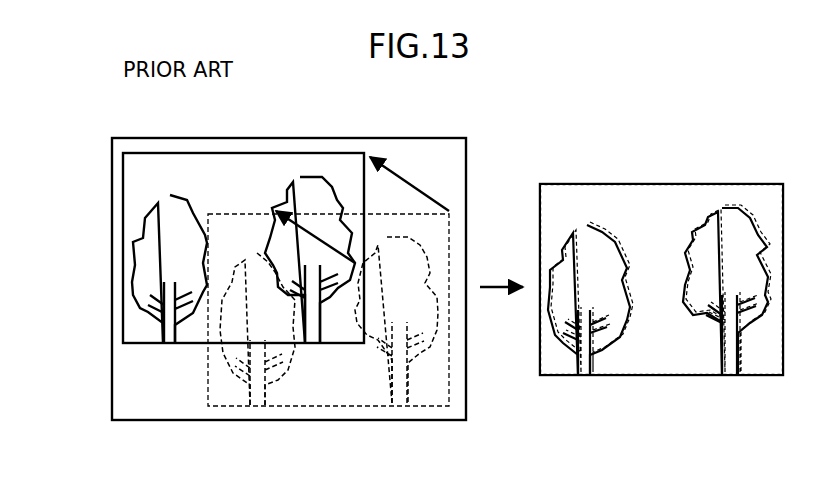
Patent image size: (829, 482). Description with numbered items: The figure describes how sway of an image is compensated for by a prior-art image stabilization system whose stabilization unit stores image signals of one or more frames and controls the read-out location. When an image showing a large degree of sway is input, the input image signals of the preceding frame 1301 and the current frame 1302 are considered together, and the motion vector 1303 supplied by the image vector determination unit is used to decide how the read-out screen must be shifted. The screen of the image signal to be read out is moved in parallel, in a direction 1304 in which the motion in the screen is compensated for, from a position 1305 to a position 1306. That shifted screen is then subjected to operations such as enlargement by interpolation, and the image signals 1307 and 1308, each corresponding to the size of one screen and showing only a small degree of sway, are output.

The (n−1)th frame 1301 is at (218, 320).
The n-th frame 1302 is at (132, 254).
The motion vector 1303 is at (310, 232).
The direction 1304 is at (408, 178).
The position 1305 is at (341, 406).
The position 1306 is at (226, 347).
The image signal 1307 is at (724, 183).
The image signal 1308 is at (610, 190).